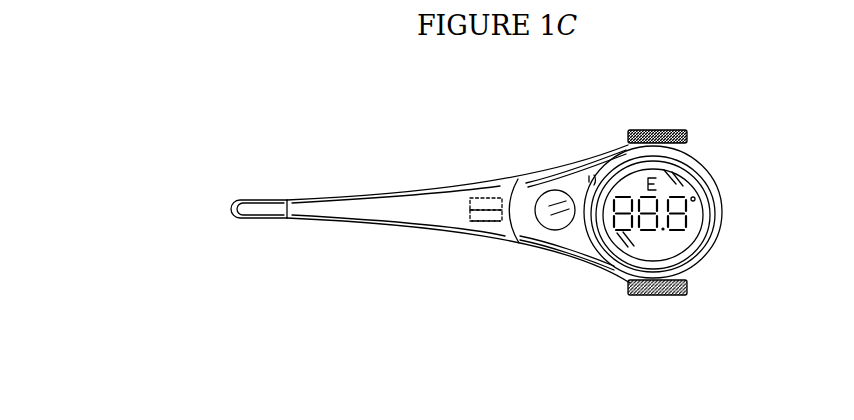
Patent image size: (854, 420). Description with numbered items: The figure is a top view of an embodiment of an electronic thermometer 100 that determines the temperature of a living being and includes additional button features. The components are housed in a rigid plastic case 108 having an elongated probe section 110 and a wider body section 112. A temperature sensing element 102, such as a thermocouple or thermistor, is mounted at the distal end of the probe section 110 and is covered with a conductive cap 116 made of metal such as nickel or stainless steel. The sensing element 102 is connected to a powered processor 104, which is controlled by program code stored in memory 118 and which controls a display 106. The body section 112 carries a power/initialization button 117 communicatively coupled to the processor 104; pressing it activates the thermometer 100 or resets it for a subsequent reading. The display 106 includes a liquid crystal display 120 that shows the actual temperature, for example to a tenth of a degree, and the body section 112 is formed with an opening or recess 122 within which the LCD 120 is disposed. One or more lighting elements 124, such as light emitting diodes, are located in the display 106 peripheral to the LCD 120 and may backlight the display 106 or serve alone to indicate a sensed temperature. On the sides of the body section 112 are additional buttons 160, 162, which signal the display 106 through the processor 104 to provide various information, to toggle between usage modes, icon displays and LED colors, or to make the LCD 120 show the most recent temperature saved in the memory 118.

The electronic thermometer 100 is at (377, 270).
The temperature sensing element 102 is at (213, 188).
The processor 104 is at (487, 200).
The display 106 is at (690, 188).
The case 108 is at (507, 180).
The probe section 110 is at (357, 208).
The body section 112 is at (560, 180).
The conductive cap 116 is at (262, 208).
The power/initialization button 117 is at (553, 222).
The memory 118 is at (485, 219).
The liquid crystal display (LCD) 120 is at (652, 185).
The opening or recess 122 is at (693, 252).
The lighting elements 124 is at (590, 172).
The additional button 160 is at (633, 130).
The additional button 162 is at (640, 293).